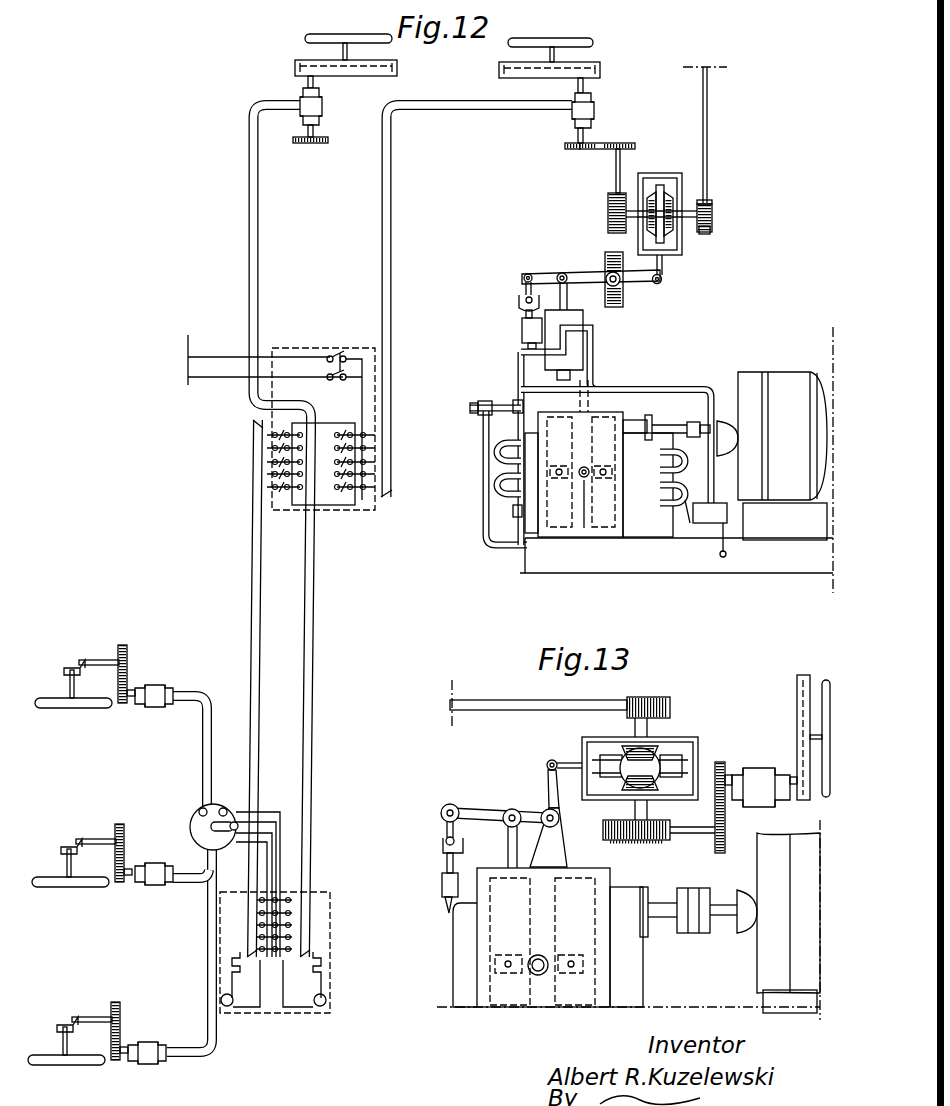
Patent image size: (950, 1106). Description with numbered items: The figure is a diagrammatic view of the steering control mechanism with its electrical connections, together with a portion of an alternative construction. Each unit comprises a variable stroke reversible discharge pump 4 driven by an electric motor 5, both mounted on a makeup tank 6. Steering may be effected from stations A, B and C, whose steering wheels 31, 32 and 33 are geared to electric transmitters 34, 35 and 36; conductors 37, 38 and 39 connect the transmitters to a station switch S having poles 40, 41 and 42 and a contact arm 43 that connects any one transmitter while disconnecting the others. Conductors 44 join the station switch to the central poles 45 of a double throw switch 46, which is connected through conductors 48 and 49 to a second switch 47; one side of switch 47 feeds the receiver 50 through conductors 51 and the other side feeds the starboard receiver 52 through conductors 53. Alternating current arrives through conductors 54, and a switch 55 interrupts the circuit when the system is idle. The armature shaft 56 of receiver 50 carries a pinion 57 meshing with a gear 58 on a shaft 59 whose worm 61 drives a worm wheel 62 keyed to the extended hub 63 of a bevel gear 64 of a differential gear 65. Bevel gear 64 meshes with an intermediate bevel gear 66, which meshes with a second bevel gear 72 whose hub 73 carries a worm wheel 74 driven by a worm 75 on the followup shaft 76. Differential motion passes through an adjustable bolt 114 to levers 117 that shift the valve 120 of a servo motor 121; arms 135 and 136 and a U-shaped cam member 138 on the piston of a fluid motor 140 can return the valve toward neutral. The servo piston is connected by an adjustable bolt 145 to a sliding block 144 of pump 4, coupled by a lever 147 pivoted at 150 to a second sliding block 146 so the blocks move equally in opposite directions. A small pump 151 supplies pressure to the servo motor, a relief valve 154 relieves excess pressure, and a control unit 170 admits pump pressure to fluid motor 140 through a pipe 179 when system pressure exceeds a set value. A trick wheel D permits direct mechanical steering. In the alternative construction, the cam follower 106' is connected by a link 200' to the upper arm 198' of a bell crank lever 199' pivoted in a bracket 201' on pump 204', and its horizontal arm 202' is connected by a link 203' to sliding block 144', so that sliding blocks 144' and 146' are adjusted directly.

In FIG. 12, the variable stroke reversible discharge pump 4 is at (605, 425).
In FIG. 12, the electric motor 5 is at (725, 456).
In FIG. 12, the makeup tank 6 is at (676, 460).
In FIG. 12, the steering wheel 31 is at (75, 1068).
In FIG. 12, the steering wheel 32 is at (81, 890).
In FIG. 12, the steering wheel 33 is at (84, 712).
In FIG. 12, the electric transmitter 34 is at (150, 1066).
In FIG. 12, the electric transmitter 35 is at (150, 888).
In FIG. 12, the electric transmitter 36 is at (155, 710).
In FIG. 12, the conductor 37 is at (208, 984).
In FIG. 12, the conductor 38 is at (188, 878).
In FIG. 12, the conductor 39 is at (203, 694).
In FIG. 12, the pole 40 is at (237, 822).
In FIG. 12, the pole 41 is at (222, 808).
In FIG. 12, the pole 42 is at (199, 812).
In FIG. 12, the contact arm 43 is at (226, 850).
In FIG. 12, the conductors 44 is at (272, 810).
In FIG. 12, the central poles 45 is at (280, 892).
In FIG. 12, the double throw switch 46 is at (318, 900).
In FIG. 12, the second switch 47 is at (360, 511).
In FIG. 12, the conductor 48 is at (253, 569).
In FIG. 12, the conductor 49 is at (311, 582).
In FIG. 12, the receiver 50 is at (594, 109).
In FIG. 12, the conductors 51 is at (389, 238).
In FIG. 12, the receiver 52 is at (322, 103).
In FIG. 12, the conductors 53 is at (256, 238).
In FIG. 12, the conductors 54 is at (228, 360).
In FIG. 12, the switch 55 is at (330, 356).
In FIG. 12, the armature shaft 56 is at (588, 142).
In FIG. 12, the pinion 57 is at (572, 148).
In FIG. 12, the gear 58 is at (627, 148).
In FIG. 12, the shaft 59 is at (615, 166).
In FIG. 12, the worm 61 is at (608, 217).
In FIG. 12, the worm wheel 62 is at (608, 201).
In FIG. 12, the extended hub 63 is at (631, 219).
In FIG. 12, the bevel gear 64 is at (648, 208).
In FIG. 12, the differential gear 65 is at (665, 178).
In FIG. 12, the intermediate bevel gear 66 is at (668, 228).
In FIG. 12, the second bevel gear 72 is at (697, 205).
In FIG. 12, the extended hub portion 73 is at (708, 205).
In FIG. 12, the worm wheel 74 is at (712, 230).
In FIG. 12, the worm 75 is at (713, 212).
In FIG. 12, the followup shaft 76 is at (708, 112).
In FIG. 12, the adjustable bolt 114 is at (664, 273).
In FIG. 12, the levers 117 is at (639, 284).
In FIG. 12, the valve 120 is at (568, 297).
In FIG. 12, the servo motor 121 is at (584, 323).
In FIG. 12, the horizontal arm 135 is at (561, 272).
In FIG. 12, the vertical arm 136 is at (524, 281).
In FIG. 12, the U-shaped cam member 138 is at (518, 303).
In FIG. 12, the fluid motor 140 is at (521, 331).
In FIG. 12, the sliding block 144 is at (555, 493).
In FIG. 12, the adjustable bolt 145 is at (576, 386).
In FIG. 12, the second sliding block 146 is at (612, 493).
In FIG. 12, the lever 147 is at (582, 528).
In FIG. 12, the pivot 150 is at (590, 470).
In FIG. 12, the small pump 151 is at (512, 513).
In FIG. 12, the relief valve 154 is at (472, 404).
In FIG. 12, the control unit 170 is at (728, 515).
In FIG. 12, the pipe 179 is at (668, 392).
In FIG. 12, the steering station A is at (46, 1068).
In FIG. 12, the steering station B is at (49, 890).
In FIG. 12, the steering station C is at (55, 712).
In FIG. 12, the trick wheel D is at (562, 47).
In FIG. 12, the station switch S is at (190, 828).
In FIG. 13, the cam follower 106' is at (640, 764).
In FIG. 13, the sliding block 144' is at (531, 937).
In FIG. 13, the sliding block 146' is at (628, 920).
In FIG. 13, the upper arm 198' is at (532, 788).
In FIG. 13, the bell crank lever 199' is at (580, 813).
In FIG. 13, the link 200' is at (556, 756).
In FIG. 13, the bracket 201' is at (573, 837).
In FIG. 13, the horizontal arm 202' is at (495, 807).
In FIG. 13, the link 203' is at (479, 867).
In FIG. 13, the pump 204' is at (630, 924).